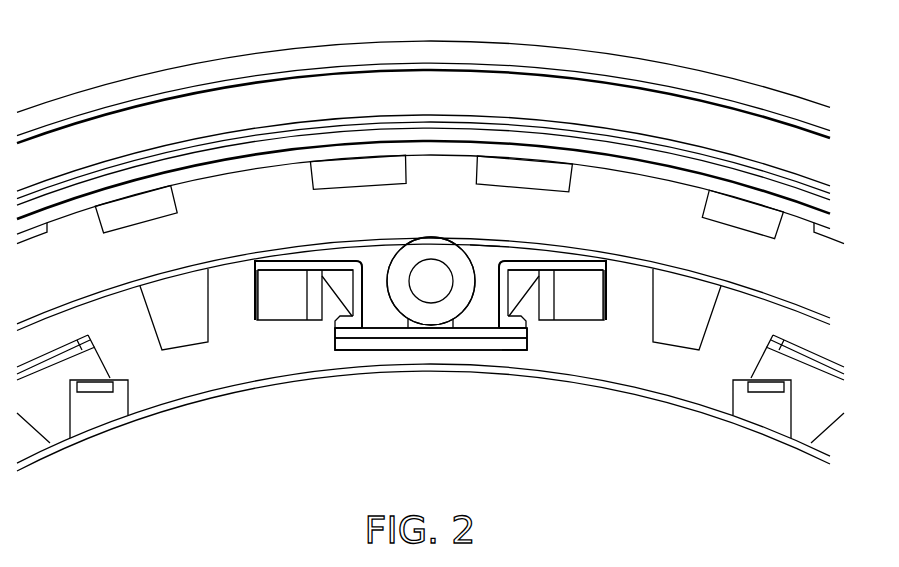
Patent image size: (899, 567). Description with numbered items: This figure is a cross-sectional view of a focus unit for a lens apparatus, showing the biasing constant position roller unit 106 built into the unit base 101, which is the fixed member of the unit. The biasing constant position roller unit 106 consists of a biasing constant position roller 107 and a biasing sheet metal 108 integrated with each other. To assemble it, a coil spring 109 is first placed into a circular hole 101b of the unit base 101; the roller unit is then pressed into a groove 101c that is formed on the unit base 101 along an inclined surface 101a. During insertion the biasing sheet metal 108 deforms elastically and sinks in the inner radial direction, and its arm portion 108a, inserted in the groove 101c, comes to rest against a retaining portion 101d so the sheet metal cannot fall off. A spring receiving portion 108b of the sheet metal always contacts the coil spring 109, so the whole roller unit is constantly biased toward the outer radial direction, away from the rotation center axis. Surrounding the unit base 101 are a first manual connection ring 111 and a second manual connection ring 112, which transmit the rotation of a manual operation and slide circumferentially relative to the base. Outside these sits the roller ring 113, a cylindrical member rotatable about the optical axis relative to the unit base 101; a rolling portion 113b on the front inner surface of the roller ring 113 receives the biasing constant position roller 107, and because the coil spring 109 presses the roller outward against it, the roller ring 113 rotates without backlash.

The unit base 101 is at (227, 343).
The inclined surface 101a is at (358, 262).
The circular hole 101b is at (252, 276).
The groove 101c is at (485, 275).
The retaining portion 101d is at (338, 320).
The biasing constant position roller unit 106 is at (408, 449).
The biasing constant position roller 107 is at (435, 308).
The biasing sheet metal 108 is at (402, 335).
The arm portion 108a is at (356, 340).
The spring receiving portion 108b is at (267, 252).
The coil spring 109 is at (287, 295).
The first manual connection ring 111 is at (117, 143).
The second manual connection ring 112 is at (145, 88).
The roller ring 113 is at (672, 200).
The rolling portion 113b is at (673, 250).